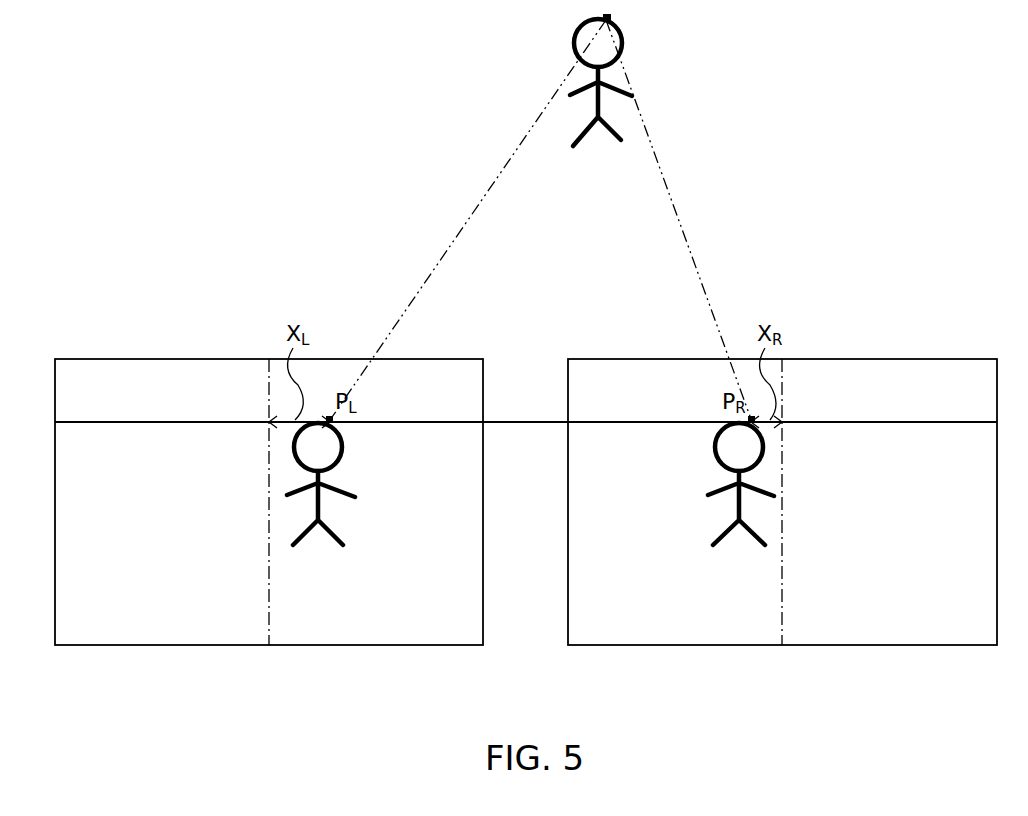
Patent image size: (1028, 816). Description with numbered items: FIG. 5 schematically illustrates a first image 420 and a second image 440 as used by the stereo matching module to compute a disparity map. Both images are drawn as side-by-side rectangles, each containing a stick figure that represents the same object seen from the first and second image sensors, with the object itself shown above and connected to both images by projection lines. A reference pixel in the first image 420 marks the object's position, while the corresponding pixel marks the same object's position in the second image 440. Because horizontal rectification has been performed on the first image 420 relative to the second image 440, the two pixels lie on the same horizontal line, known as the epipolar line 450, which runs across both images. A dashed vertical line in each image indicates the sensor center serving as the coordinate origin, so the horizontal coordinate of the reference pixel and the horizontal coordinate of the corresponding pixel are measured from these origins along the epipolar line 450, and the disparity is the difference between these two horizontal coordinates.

The first image 420 is at (126, 359).
The second image 440 is at (810, 359).
The epipolar line 450 is at (528, 421).